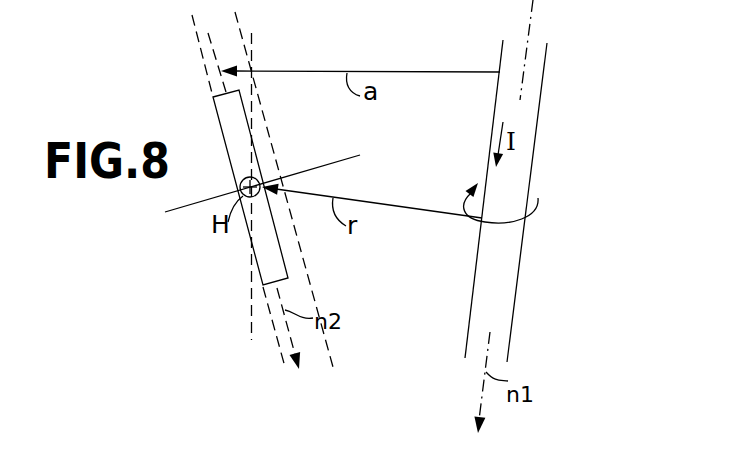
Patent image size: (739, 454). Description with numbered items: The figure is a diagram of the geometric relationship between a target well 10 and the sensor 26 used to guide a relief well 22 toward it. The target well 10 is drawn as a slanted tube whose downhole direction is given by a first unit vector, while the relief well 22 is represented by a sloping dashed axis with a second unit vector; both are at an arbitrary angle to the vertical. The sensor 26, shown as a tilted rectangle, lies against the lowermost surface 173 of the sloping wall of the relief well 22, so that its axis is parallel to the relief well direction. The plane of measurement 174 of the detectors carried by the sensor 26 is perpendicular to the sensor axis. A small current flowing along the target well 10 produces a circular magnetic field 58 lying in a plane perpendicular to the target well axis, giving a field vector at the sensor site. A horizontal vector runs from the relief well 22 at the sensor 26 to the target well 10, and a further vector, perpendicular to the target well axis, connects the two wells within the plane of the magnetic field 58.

The target well 10 is at (518, 295).
The relief well 22 is at (244, 33).
The sensor 26 is at (253, 129).
The magnetic field 58 is at (538, 198).
The lowermost surface 173 is at (214, 71).
The plane of measurement 174 is at (311, 169).